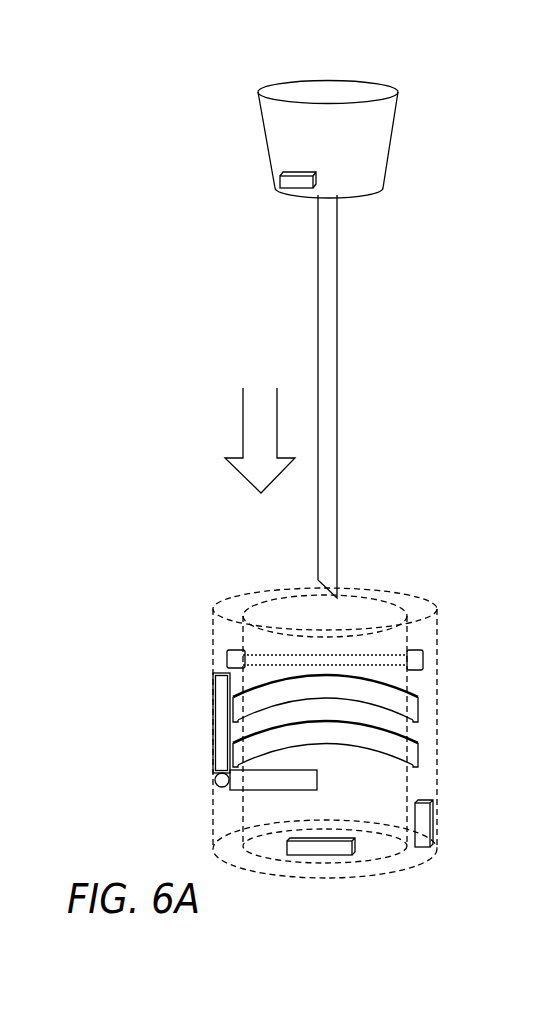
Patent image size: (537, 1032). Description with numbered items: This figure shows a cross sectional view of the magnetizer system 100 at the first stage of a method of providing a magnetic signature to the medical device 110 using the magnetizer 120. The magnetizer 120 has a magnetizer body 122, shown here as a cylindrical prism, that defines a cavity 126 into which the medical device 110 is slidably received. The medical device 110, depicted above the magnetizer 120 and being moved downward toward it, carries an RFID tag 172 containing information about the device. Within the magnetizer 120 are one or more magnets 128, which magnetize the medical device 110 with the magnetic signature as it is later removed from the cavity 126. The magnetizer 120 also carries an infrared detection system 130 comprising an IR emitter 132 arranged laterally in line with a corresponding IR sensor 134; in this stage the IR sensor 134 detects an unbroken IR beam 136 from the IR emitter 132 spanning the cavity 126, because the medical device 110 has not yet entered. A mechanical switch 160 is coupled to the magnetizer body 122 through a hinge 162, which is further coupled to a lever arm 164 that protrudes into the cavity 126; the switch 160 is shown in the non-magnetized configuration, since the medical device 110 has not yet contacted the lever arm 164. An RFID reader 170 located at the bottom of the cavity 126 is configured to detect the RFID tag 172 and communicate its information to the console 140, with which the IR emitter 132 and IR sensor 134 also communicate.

The magnetizer system 100 is at (210, 285).
The medical device 110 is at (338, 258).
The magnetizer 120 is at (408, 577).
The magnetizer body 122 is at (213, 850).
The cavity 126 is at (378, 787).
The magnets 128 is at (418, 705).
The infrared detection system 130 is at (453, 652).
The IR emitter 132 is at (227, 657).
The IR sensor 134 is at (424, 657).
The IR beam 136 is at (300, 662).
The console 140 is at (433, 810).
The mechanical switch 160 is at (212, 717).
The hinge 162 is at (216, 782).
The lever arm 164 is at (257, 782).
The RFID reader 170 is at (343, 855).
The RFID tag 172 is at (292, 177).